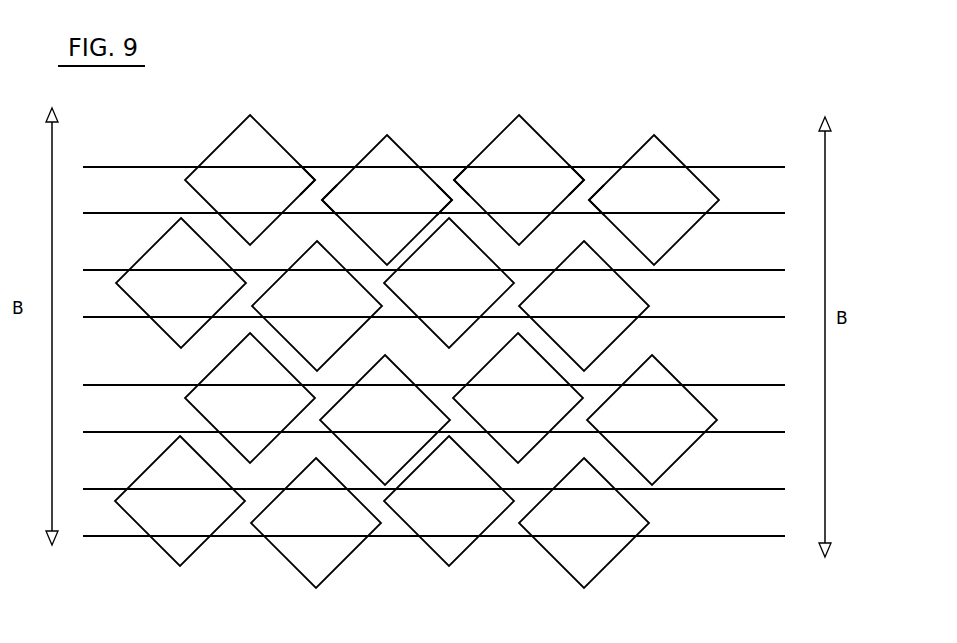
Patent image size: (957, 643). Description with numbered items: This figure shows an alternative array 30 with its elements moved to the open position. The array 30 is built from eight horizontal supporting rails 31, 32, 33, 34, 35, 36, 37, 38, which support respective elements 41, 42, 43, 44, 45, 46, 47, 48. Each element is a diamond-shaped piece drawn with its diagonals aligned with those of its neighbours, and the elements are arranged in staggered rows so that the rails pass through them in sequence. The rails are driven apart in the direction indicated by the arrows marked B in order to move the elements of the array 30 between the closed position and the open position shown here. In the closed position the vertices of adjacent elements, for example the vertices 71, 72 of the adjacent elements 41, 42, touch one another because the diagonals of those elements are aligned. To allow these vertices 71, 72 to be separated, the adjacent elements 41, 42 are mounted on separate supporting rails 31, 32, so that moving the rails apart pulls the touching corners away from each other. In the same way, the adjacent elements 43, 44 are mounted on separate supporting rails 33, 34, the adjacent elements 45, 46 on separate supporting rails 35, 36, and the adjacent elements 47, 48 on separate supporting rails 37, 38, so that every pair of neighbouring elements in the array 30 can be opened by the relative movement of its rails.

The array 30 is at (477, 66).
The supporting rail 31 is at (450, 166).
The supporting rail 32 is at (450, 212).
The supporting rail 33 is at (450, 269).
The supporting rail 34 is at (450, 316).
The supporting rail 35 is at (450, 384).
The supporting rail 36 is at (450, 431).
The supporting rail 37 is at (450, 488).
The supporting rail 38 is at (450, 535).
The element 41 is at (384, 180).
The element 42 is at (520, 200).
The element 43 is at (315, 283).
The element 44 is at (450, 306).
The element 45 is at (384, 398).
The element 46 is at (518, 420).
The element 47 is at (314, 501).
The element 48 is at (450, 523).
The vertex 71 is at (314, 180).
The vertex 72 is at (323, 200).